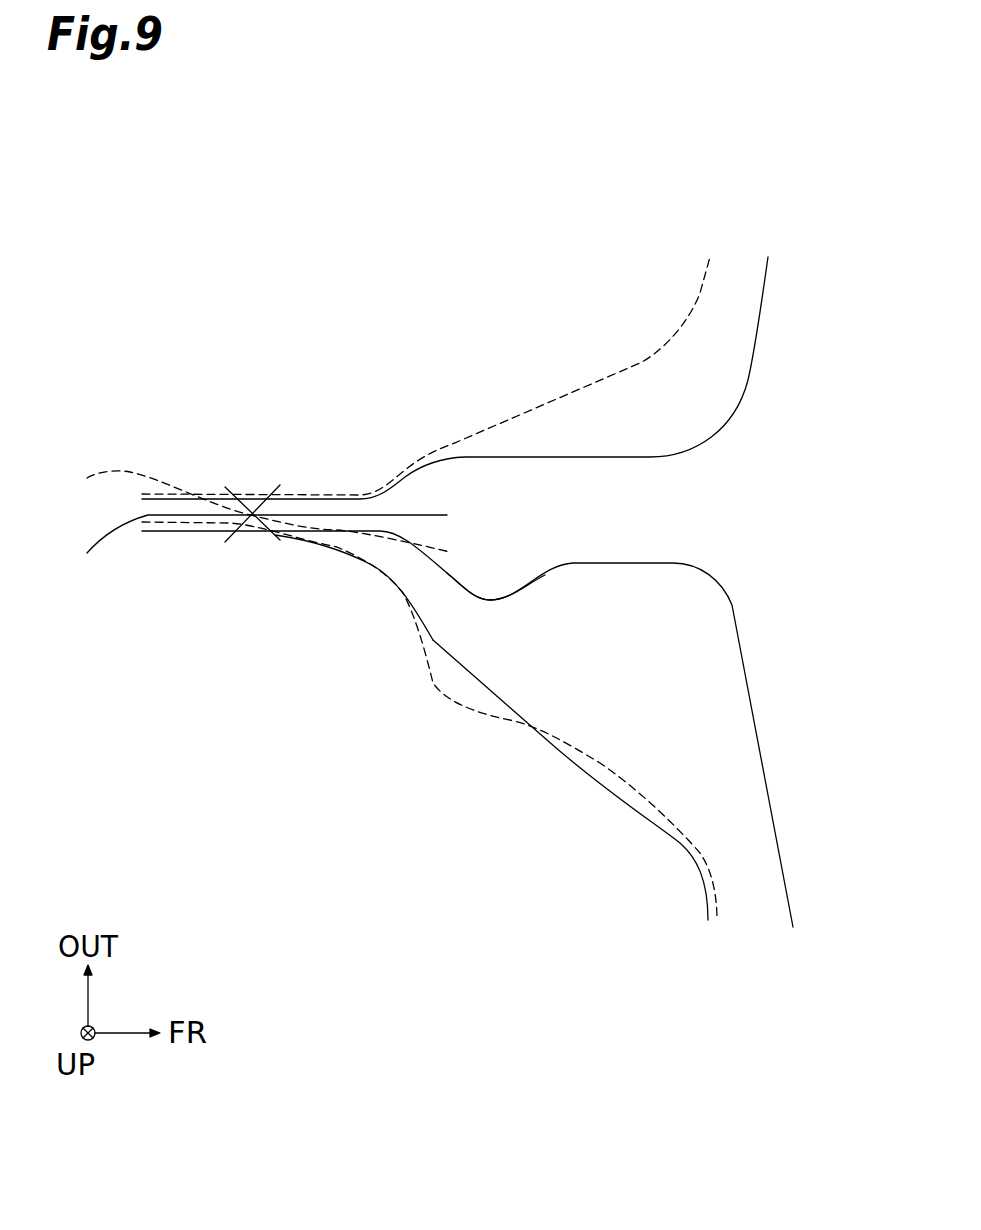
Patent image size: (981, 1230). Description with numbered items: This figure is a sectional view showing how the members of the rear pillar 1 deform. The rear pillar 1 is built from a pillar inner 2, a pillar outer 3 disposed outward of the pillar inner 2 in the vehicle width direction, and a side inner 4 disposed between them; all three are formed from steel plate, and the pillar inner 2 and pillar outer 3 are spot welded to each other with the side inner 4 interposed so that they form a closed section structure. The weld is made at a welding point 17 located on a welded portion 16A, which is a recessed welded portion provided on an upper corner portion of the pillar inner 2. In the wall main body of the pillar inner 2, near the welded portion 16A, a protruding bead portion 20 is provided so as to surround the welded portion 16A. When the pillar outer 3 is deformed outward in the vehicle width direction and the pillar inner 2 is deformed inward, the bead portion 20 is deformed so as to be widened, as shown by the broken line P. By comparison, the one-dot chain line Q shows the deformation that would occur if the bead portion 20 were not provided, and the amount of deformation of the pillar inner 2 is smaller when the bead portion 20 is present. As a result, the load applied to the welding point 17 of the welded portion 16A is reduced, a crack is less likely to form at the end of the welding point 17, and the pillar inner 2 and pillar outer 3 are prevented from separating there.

The rear pillar 1 is at (298, 240).
The pillar inner 2 is at (645, 567).
The pillar outer 3 is at (650, 455).
The side inner 4 is at (430, 512).
The welding point 17 is at (237, 483).
The welded portion 16A is at (323, 538).
The bead portion 20 is at (487, 600).
The broken line P is at (587, 750).
The one-dot chain line Q is at (567, 762).